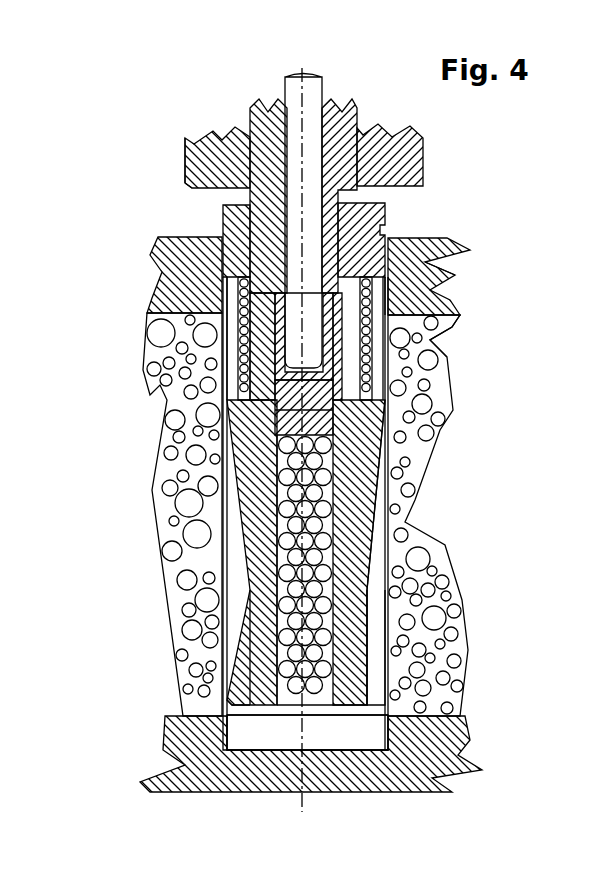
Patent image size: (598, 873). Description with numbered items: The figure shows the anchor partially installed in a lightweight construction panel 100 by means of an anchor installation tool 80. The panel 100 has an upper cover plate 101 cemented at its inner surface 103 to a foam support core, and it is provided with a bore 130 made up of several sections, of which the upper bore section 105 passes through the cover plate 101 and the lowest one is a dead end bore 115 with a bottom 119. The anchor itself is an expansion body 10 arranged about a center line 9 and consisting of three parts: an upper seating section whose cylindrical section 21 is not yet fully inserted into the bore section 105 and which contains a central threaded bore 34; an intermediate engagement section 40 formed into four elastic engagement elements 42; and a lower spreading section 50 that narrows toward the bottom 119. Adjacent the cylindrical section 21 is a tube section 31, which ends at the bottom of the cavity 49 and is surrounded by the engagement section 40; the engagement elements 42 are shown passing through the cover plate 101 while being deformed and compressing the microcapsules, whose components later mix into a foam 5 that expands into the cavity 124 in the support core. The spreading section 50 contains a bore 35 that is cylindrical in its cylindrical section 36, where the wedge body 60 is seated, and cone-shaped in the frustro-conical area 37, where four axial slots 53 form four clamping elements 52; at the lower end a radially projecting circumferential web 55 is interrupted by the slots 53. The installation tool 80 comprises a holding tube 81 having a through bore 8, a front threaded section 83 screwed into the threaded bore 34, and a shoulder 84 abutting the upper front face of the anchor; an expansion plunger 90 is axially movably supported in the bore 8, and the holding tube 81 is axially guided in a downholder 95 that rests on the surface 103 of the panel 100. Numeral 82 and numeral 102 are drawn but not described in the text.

The holding tube 81 is at (260, 118).
The tube 82 is at (287, 128).
The downholder 95 is at (193, 155).
The through bore 8 is at (268, 177).
The shoulder 84 is at (222, 225).
The expansion plunger 90 is at (297, 240).
The cylindrical section 21 is at (185, 243).
The threaded section 83 is at (240, 255).
The foam 5 is at (278, 267).
The tube section 31 is at (252, 318).
The threaded bore 34 is at (260, 340).
The engagement elements 42 is at (232, 373).
The cylindrical section 36 is at (275, 512).
The bore 35 is at (265, 577).
The axial slots 53 is at (273, 617).
The frustro-conical area 37 is at (270, 662).
The clamping elements 52 is at (232, 702).
The circumferential web 55 is at (227, 707).
The anchor installation tool 80 is at (430, 150).
The bore 130 is at (392, 226).
The grout layer 102 is at (430, 238).
The cover plate 101 is at (413, 275).
The bore section 105 is at (386, 305).
The inner surface 103 is at (445, 315).
The cavity 49 is at (340, 345).
The wedge body 60 is at (342, 385).
The engagement section 40 is at (326, 410).
The lightweight construction panel 100 is at (437, 480).
The expansion body 10 is at (377, 543).
The cavity 124 is at (378, 567).
The center line 9 is at (370, 588).
The spreading section 50 is at (370, 638).
The dead end bore 115 is at (392, 730).
The bottom 119 is at (323, 750).